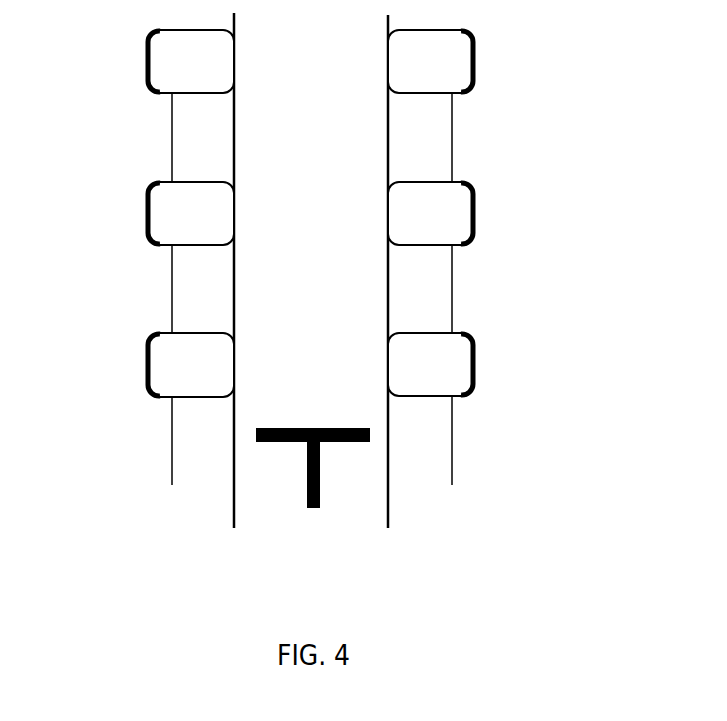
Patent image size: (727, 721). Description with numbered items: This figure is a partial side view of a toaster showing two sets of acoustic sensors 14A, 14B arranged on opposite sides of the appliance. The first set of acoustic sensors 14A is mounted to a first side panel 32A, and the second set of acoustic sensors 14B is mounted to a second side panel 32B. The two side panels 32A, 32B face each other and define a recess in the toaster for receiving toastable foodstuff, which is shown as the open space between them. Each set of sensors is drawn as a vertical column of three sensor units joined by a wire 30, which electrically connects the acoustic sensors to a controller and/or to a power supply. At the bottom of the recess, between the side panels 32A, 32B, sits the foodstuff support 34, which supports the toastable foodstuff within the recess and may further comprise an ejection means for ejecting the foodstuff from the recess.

The acoustic sensors 14A is at (138, 213).
The acoustic sensors 14B is at (488, 61).
The wire 30 is at (158, 438).
The side panel 32A is at (224, 508).
The side panel 32B is at (402, 503).
The foodstuff support 34 is at (295, 507).